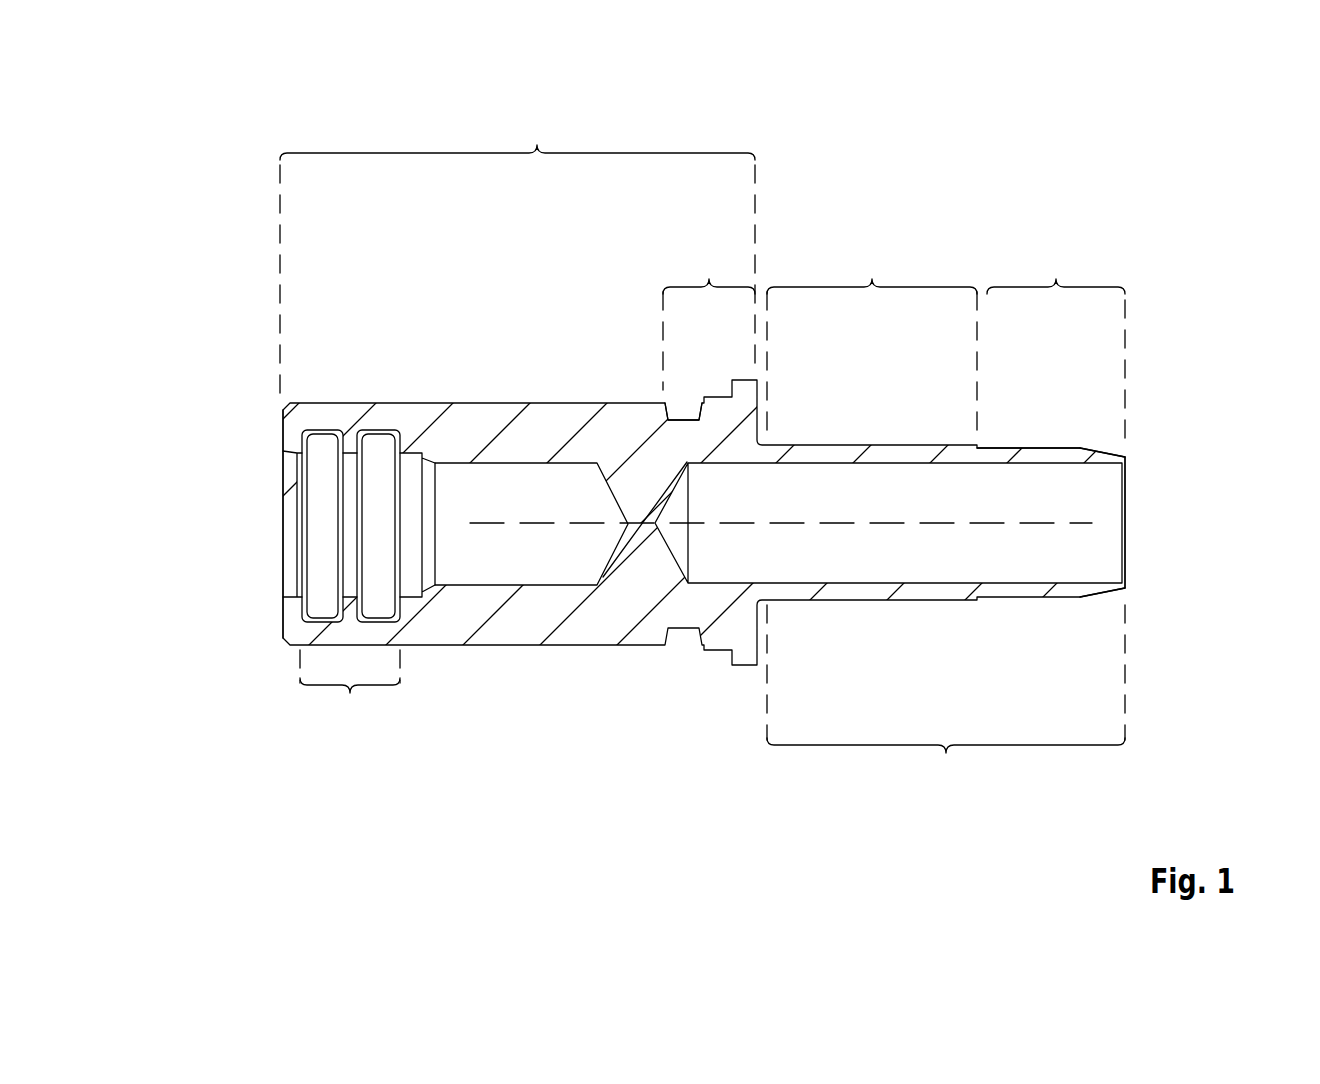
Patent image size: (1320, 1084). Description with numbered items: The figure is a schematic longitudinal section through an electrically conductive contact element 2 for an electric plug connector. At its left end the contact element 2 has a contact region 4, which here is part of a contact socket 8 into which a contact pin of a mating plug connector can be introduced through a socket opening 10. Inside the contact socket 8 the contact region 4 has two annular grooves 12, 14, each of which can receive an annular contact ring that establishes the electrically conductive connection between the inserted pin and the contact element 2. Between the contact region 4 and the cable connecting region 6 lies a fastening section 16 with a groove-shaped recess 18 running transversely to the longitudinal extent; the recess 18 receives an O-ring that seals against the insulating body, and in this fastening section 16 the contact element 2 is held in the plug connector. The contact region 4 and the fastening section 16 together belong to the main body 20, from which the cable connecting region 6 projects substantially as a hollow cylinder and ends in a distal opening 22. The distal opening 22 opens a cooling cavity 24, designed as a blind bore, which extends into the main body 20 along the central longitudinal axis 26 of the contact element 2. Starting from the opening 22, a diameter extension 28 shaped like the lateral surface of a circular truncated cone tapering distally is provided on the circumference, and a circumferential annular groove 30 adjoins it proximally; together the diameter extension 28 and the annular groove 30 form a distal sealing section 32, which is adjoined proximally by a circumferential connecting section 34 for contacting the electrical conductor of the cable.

The contact element 2 is at (1213, 188).
The contact region 4 is at (350, 694).
The cable connecting region 6 is at (946, 701).
The contact socket 8 is at (523, 487).
The socket opening 10 is at (270, 523).
The annular groove 12 is at (322, 440).
The annular groove 14 is at (374, 440).
The fastening section 16 is at (709, 312).
The groove-shaped recess 18 is at (687, 391).
The main body 20 is at (517, 247).
The distal opening 22 is at (1139, 524).
The cooling cavity 24 is at (712, 553).
The central longitudinal axis 26 is at (530, 528).
The diameter extension 28 is at (1106, 433).
The annular groove 30 is at (1036, 410).
The distal sealing section 32 is at (1051, 332).
The connecting section 34 is at (872, 333).